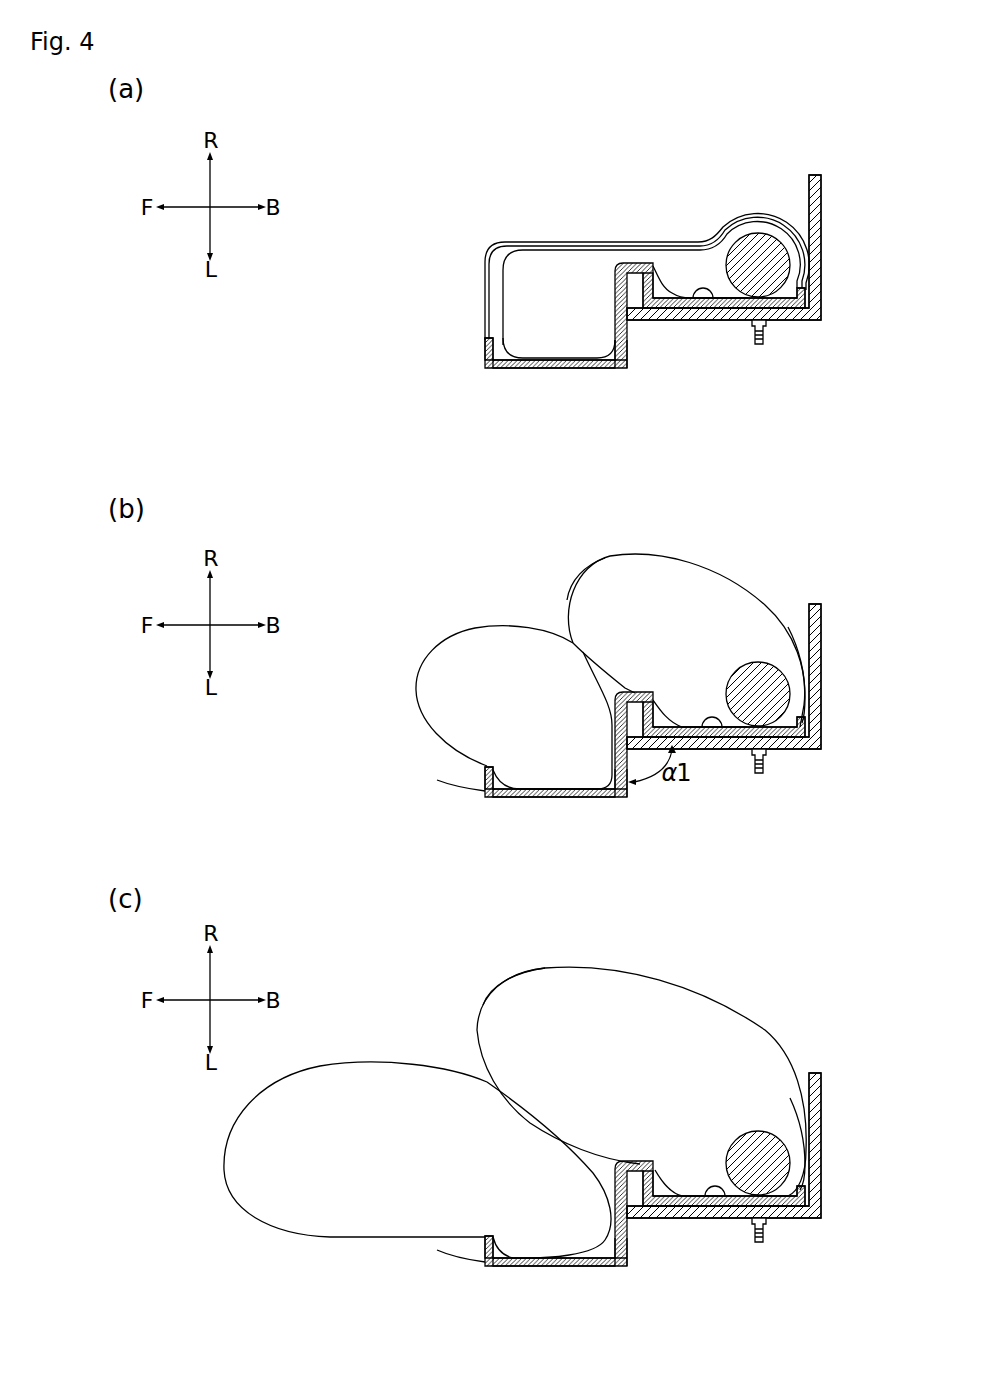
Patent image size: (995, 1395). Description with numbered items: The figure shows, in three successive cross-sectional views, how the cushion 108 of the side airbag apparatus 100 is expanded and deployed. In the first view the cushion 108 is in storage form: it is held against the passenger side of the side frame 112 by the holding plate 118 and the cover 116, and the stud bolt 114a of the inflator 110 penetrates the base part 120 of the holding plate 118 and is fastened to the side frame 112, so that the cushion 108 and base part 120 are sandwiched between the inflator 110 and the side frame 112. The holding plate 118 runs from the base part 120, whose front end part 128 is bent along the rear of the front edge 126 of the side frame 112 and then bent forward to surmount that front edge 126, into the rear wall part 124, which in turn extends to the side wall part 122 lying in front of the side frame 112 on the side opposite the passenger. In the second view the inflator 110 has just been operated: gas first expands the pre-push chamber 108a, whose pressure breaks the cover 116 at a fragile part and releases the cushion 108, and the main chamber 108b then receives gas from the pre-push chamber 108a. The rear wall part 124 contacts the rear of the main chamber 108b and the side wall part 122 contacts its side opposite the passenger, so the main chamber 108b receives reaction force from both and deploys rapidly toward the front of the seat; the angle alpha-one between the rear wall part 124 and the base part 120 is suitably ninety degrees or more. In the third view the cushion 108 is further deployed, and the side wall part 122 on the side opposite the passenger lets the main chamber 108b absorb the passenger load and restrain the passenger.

The side airbag apparatus 100 is at (803, 150).
The cushion 108 is at (692, 259).
The pre-push chamber 108a is at (566, 580).
The main chamber 108b is at (440, 643).
The inflator 110 is at (757, 240).
The side frame 112 is at (815, 321).
The stud bolt 114a is at (759, 346).
The cover 116 is at (484, 293).
The holding plate 118 is at (485, 365).
The base part 120 is at (703, 305).
The side wall part 122 is at (543, 369).
The rear wall part 124 is at (615, 300).
The front edge 126 is at (628, 321).
The front end part 128 is at (651, 262).